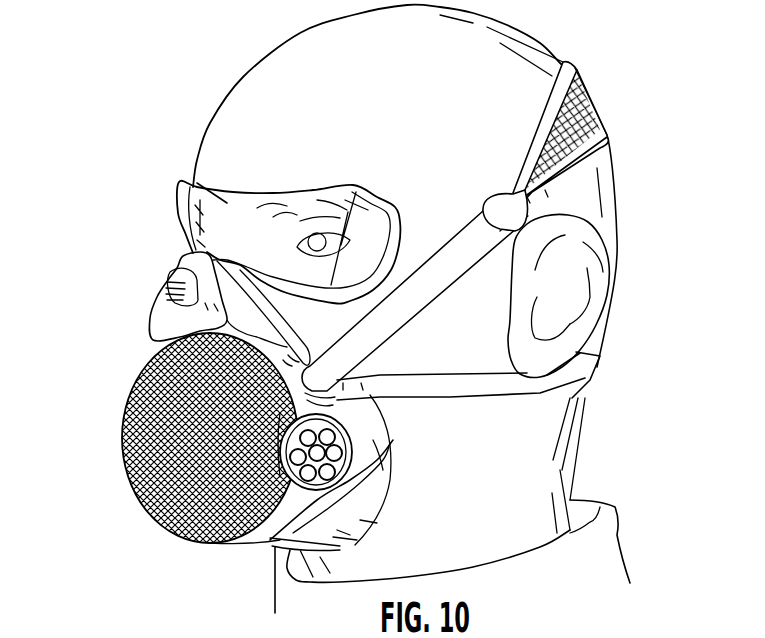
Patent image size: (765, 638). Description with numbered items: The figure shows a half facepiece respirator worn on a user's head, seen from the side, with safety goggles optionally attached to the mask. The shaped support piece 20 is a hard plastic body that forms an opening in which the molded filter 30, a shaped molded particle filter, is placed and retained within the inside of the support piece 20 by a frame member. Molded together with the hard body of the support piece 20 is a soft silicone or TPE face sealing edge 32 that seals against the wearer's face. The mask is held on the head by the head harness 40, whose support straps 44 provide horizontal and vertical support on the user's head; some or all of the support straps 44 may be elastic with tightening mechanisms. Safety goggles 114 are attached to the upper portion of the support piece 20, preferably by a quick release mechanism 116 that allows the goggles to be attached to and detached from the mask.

The support piece 20 is at (118, 329).
The molded filter 30 is at (125, 447).
The face sealing edge 32 is at (280, 547).
The head harness 40 is at (587, 97).
The support straps 44 is at (592, 375).
The safety goggles 114 is at (227, 203).
The quick release mechanism 116 is at (165, 284).